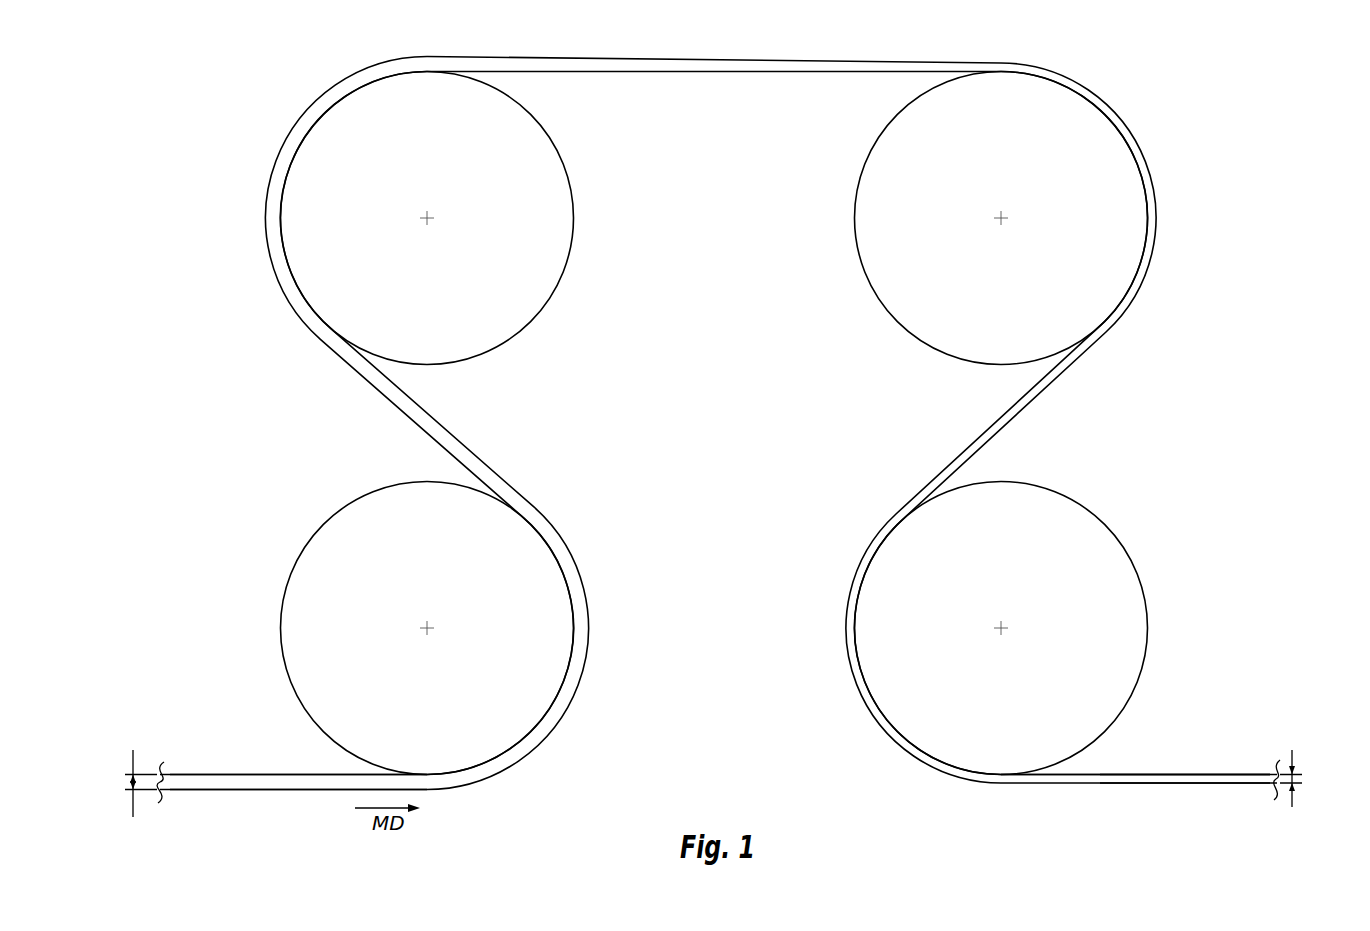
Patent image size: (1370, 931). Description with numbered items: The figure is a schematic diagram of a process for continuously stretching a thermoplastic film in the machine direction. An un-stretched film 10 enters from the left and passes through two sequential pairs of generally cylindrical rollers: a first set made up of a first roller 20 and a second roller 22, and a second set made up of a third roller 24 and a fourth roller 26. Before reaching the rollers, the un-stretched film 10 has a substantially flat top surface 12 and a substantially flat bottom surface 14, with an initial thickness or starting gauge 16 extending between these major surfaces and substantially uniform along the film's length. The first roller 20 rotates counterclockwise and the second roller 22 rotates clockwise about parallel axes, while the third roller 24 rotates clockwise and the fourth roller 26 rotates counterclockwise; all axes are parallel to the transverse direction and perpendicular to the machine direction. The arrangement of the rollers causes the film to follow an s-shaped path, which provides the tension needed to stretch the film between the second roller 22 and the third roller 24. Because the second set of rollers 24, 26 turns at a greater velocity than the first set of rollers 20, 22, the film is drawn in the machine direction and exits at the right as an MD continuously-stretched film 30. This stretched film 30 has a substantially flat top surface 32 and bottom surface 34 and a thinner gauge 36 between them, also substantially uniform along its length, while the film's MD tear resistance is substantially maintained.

The un-stretched film 10 is at (222, 782).
The top surface 12 is at (288, 773).
The bottom surface 14 is at (243, 790).
The starting gauge 16 is at (133, 782).
The first roller 20 is at (292, 571).
The second roller 22 is at (565, 268).
The third roller 24 is at (863, 268).
The fourth roller 26 is at (1136, 571).
The MD continuously-stretched film 30 is at (1208, 775).
The top surface 32 is at (1145, 775).
The bottom surface 34 is at (1187, 784).
The gauge 36 is at (1300, 780).